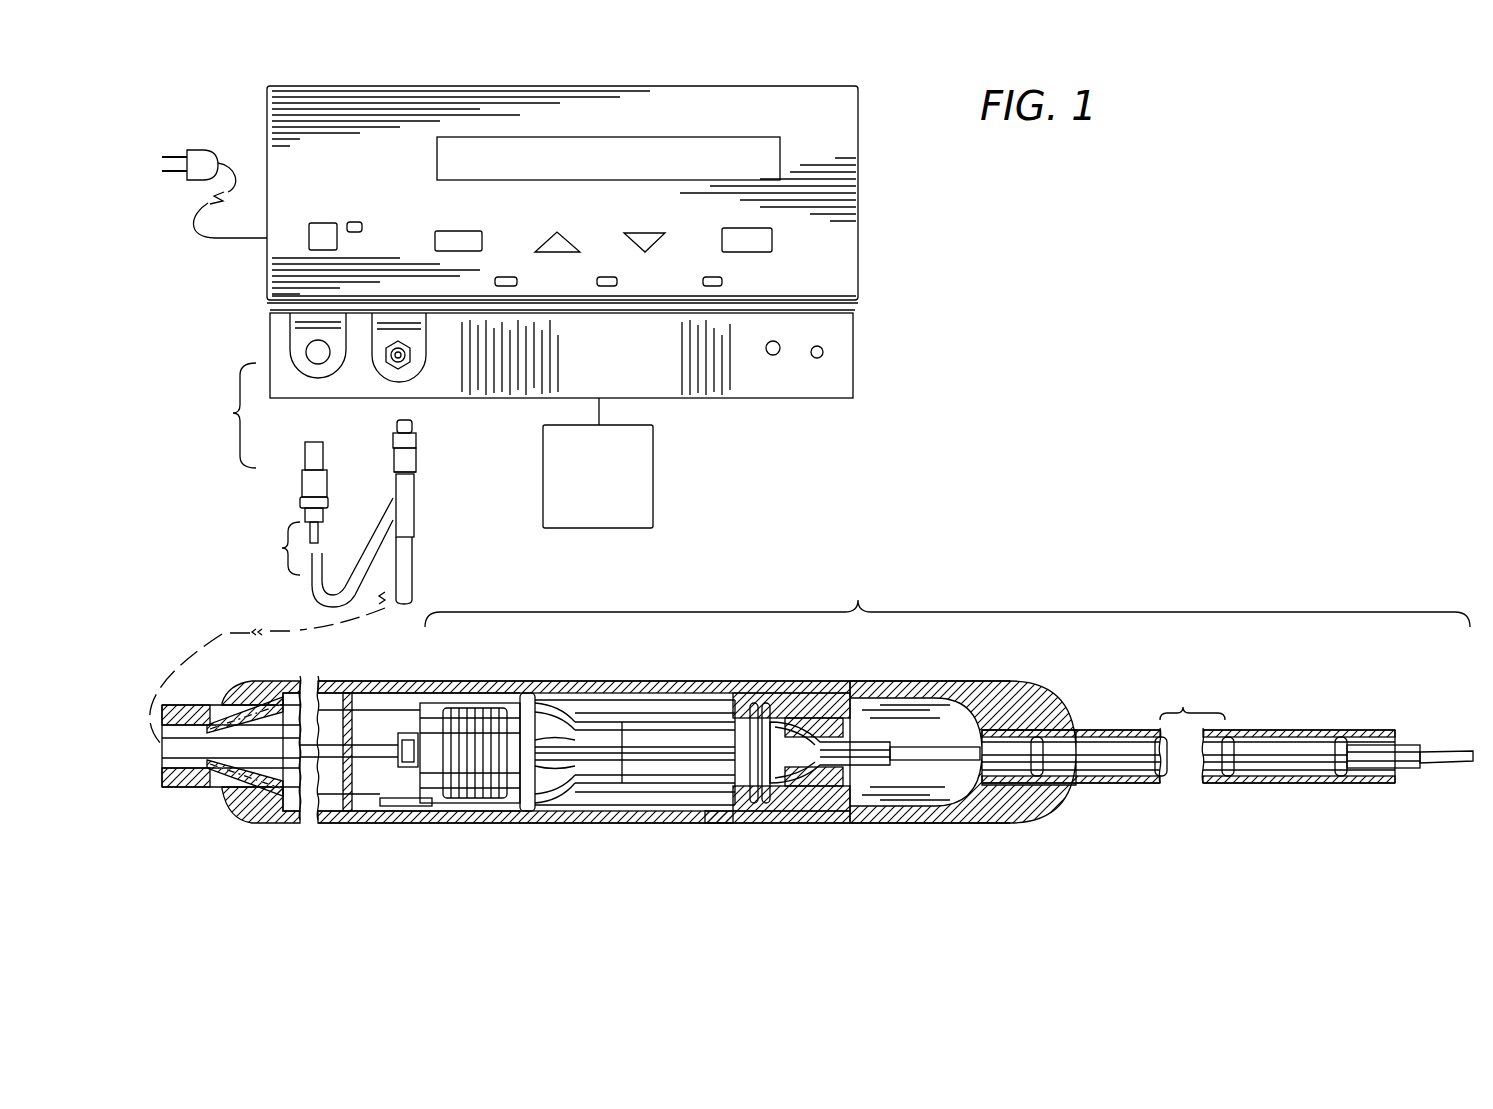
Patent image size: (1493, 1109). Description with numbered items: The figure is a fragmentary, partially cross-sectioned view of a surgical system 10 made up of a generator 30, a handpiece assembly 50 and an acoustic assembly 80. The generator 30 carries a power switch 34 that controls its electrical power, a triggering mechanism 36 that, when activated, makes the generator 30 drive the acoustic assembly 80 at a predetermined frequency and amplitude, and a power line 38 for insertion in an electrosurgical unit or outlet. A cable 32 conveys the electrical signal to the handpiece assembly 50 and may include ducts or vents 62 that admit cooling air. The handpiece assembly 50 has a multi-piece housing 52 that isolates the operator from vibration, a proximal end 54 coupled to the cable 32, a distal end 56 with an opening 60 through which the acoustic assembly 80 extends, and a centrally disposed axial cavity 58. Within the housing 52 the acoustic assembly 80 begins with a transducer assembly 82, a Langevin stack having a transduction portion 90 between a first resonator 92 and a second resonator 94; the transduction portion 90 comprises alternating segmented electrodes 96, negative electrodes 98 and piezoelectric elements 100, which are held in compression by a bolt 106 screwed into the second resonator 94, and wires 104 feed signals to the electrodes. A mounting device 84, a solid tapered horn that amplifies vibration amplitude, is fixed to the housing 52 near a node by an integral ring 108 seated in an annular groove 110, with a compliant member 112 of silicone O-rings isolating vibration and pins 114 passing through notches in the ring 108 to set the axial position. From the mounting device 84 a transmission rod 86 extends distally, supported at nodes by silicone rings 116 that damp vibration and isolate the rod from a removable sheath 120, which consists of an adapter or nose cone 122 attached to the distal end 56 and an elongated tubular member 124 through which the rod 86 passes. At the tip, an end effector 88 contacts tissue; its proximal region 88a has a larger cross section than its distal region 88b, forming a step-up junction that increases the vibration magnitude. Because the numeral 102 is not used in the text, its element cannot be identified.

The surgical system 10 is at (1120, 242).
The generator 30 is at (858, 150).
The cable 32 is at (218, 637).
The power switch 34 is at (309, 236).
The triggering mechanism 36 is at (653, 487).
The power line 38 is at (230, 165).
The handpiece assembly 50 is at (815, 743).
The housing 52 is at (386, 680).
The proximal end 54 is at (228, 800).
The distal end 56 is at (767, 828).
The axial opening or cavity 58 is at (671, 806).
The opening 60 is at (848, 733).
The ducts or vents 62 is at (231, 727).
The acoustic assembly 80 is at (947, 592).
The transducer assembly 82 is at (528, 690).
The mounting device 84 is at (678, 718).
The transmission rod 86 is at (1133, 786).
The end effector 88 is at (1395, 757).
The proximal region 88a is at (1383, 770).
The distal region 88b is at (1453, 752).
The transduction portion 90 is at (506, 690).
The first resonator 92 is at (436, 800).
The second resonator 94 is at (570, 770).
The segmented electrodes 96 is at (486, 850).
The negative electrodes 98 is at (437, 725).
The piezoelectric elements 100 is at (440, 746).
The retaining ring 102 is at (340, 690).
The wires 104 is at (420, 805).
The bolt 106 is at (382, 808).
The integral ring 108 is at (762, 707).
The annular groove 110 is at (757, 812).
The compliant member 112 is at (753, 705).
The pins 114 is at (660, 742).
The silicone rings 116 is at (1152, 740).
The removable sheath 120 is at (1060, 690).
The adapter or nose cone 122 is at (1002, 688).
The tubular member 124 is at (1267, 787).